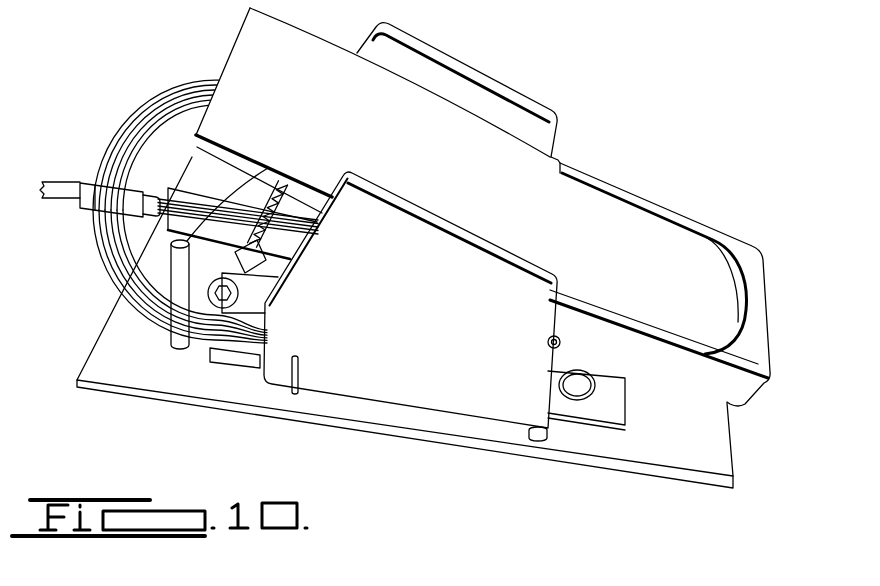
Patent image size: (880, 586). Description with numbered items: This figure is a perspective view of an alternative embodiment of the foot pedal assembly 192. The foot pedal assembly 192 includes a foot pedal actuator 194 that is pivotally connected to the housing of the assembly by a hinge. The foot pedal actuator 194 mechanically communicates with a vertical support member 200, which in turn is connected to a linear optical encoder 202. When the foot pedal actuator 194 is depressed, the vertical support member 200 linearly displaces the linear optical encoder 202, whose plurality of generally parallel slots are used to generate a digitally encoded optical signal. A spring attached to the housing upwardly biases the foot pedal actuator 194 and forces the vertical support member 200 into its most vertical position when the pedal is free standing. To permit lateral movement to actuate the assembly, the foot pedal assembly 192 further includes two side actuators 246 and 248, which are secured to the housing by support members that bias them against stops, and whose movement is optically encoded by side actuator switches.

The foot pedal assembly 192 is at (652, 128).
The foot pedal actuator 194 is at (717, 234).
The side actuator 246 is at (494, 87).
The side actuator 248 is at (459, 393).
The vertical support member 200 is at (281, 187).
The linear optical encoder 202 is at (255, 293).